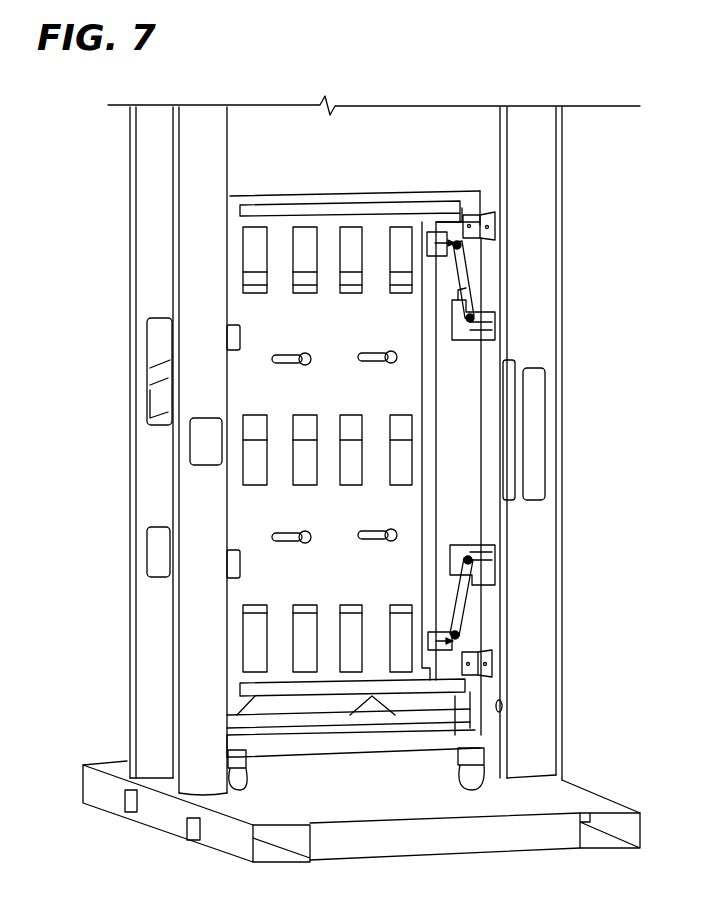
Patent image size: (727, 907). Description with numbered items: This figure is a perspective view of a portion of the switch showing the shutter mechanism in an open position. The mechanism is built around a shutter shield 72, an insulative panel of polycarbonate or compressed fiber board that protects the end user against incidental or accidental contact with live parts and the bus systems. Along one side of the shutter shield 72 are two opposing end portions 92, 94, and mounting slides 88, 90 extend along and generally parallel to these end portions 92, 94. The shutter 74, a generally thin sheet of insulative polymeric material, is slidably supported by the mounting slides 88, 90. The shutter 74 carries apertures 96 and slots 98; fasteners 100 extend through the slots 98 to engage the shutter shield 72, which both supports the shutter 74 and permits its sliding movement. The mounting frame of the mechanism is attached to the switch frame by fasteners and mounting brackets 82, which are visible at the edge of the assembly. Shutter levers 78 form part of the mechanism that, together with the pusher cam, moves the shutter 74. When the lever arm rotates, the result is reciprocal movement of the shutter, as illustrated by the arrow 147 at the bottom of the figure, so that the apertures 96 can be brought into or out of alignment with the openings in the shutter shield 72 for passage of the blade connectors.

The shutter shield 72 is at (452, 493).
The shutter 74 is at (265, 392).
The shutter lever 78 is at (497, 288).
The mounting bracket 82 is at (490, 242).
The mounting slide 88 is at (385, 205).
The mounting slide 90 is at (126, 680).
The end portion 92 is at (442, 190).
The end portion 94 is at (560, 742).
The apertures 96 is at (300, 222).
The slots 98 is at (288, 362).
The fasteners 100 is at (303, 352).
The arrow 147 is at (360, 790).